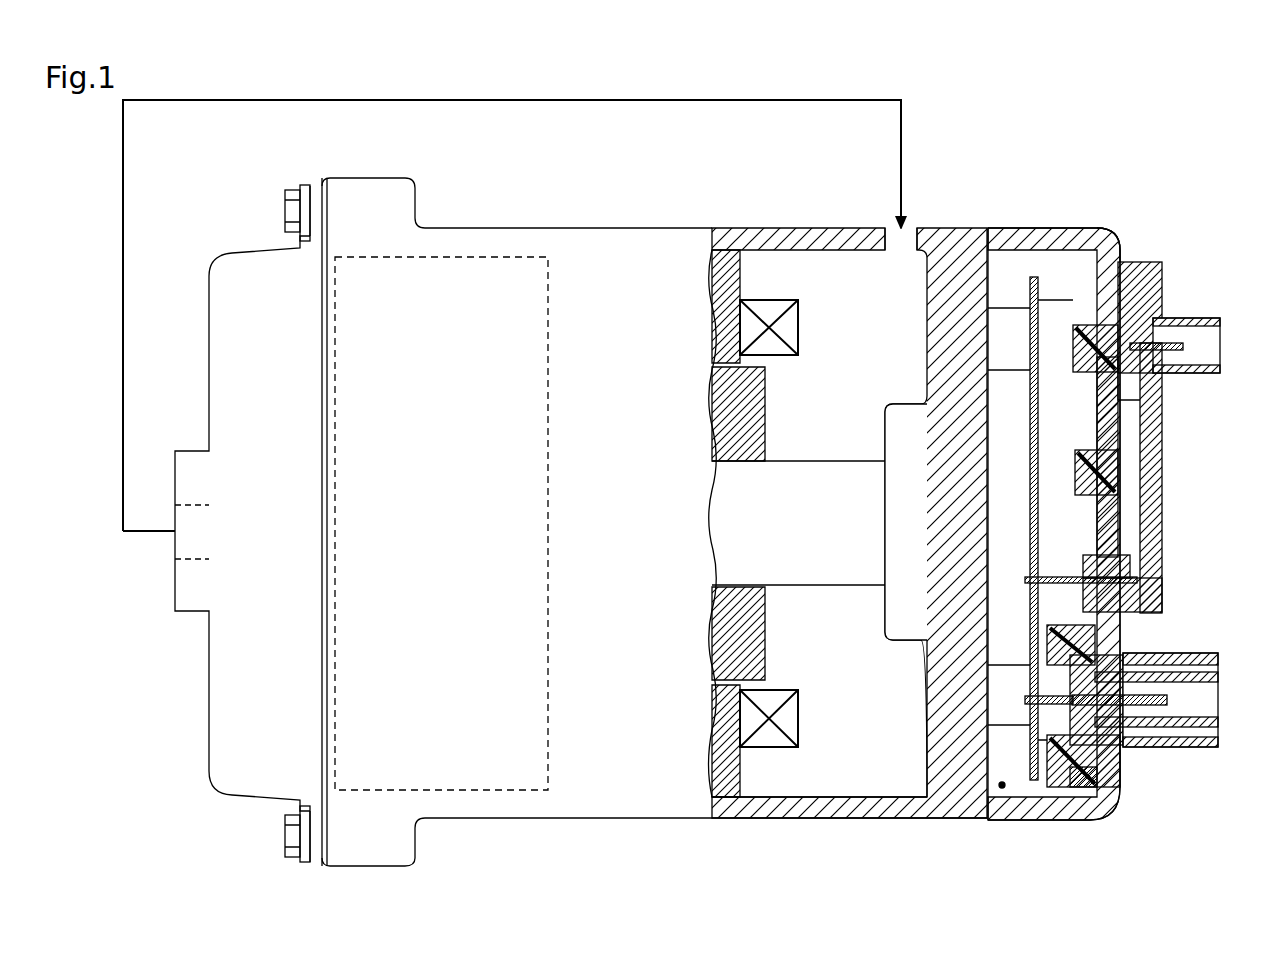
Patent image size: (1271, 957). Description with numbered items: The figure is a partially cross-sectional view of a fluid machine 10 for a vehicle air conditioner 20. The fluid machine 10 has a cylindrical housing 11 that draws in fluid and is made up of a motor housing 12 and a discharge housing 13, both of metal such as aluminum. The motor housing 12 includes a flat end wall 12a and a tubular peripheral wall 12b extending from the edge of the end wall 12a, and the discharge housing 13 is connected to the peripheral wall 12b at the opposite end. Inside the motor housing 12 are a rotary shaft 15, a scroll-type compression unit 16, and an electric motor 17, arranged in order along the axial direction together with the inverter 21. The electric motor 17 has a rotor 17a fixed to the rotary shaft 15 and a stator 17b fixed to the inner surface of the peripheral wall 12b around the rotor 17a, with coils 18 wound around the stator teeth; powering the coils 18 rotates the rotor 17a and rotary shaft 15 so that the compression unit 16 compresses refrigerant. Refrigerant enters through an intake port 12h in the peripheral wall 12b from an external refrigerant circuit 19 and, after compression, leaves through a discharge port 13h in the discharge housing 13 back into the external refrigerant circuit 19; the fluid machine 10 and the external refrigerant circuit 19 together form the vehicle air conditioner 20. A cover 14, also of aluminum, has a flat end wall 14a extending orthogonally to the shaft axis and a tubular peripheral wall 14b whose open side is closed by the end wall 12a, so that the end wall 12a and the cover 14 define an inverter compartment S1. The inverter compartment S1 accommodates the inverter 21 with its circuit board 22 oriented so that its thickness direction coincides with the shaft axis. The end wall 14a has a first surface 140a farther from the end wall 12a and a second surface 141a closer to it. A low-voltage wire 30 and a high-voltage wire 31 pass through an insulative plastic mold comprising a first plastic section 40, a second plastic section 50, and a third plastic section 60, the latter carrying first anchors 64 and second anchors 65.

The fluid machine 10 is at (1164, 174).
The housing 11 is at (650, 228).
The motor housing 12 is at (849, 519).
The end wall 12a is at (927, 708).
The peripheral wall 12b is at (885, 818).
The intake port 12h is at (888, 250).
The discharge housing 13 is at (263, 249).
The discharge port 13h is at (185, 507).
The cover 14 is at (1090, 495).
The end wall 14a is at (1120, 258).
The peripheral wall 14b is at (1016, 236).
The rotary shaft 15 is at (812, 587).
The compression unit 16 is at (473, 257).
The electric motor 17 is at (779, 488).
The rotor 17a is at (768, 405).
The stator 17b is at (742, 274).
The coils 18 is at (800, 331).
The external refrigerant circuit 19 is at (905, 151).
The vehicle air conditioner 20 is at (917, 98).
The inverter 21 is at (1046, 272).
The circuit board 22 is at (1033, 520).
The low-voltage wire 30 is at (1150, 447).
The high-voltage wire 31 is at (1168, 700).
The first plastic section 40 is at (1160, 284).
The second plastic section 50 is at (1078, 790).
The third plastic section 60 is at (1162, 515).
The first anchors 64 is at (1082, 326).
The second anchors 65 is at (1030, 645).
The first surface 140a is at (1135, 548).
The second surface 141a is at (1140, 400).
The inverter compartment S1 is at (1002, 790).